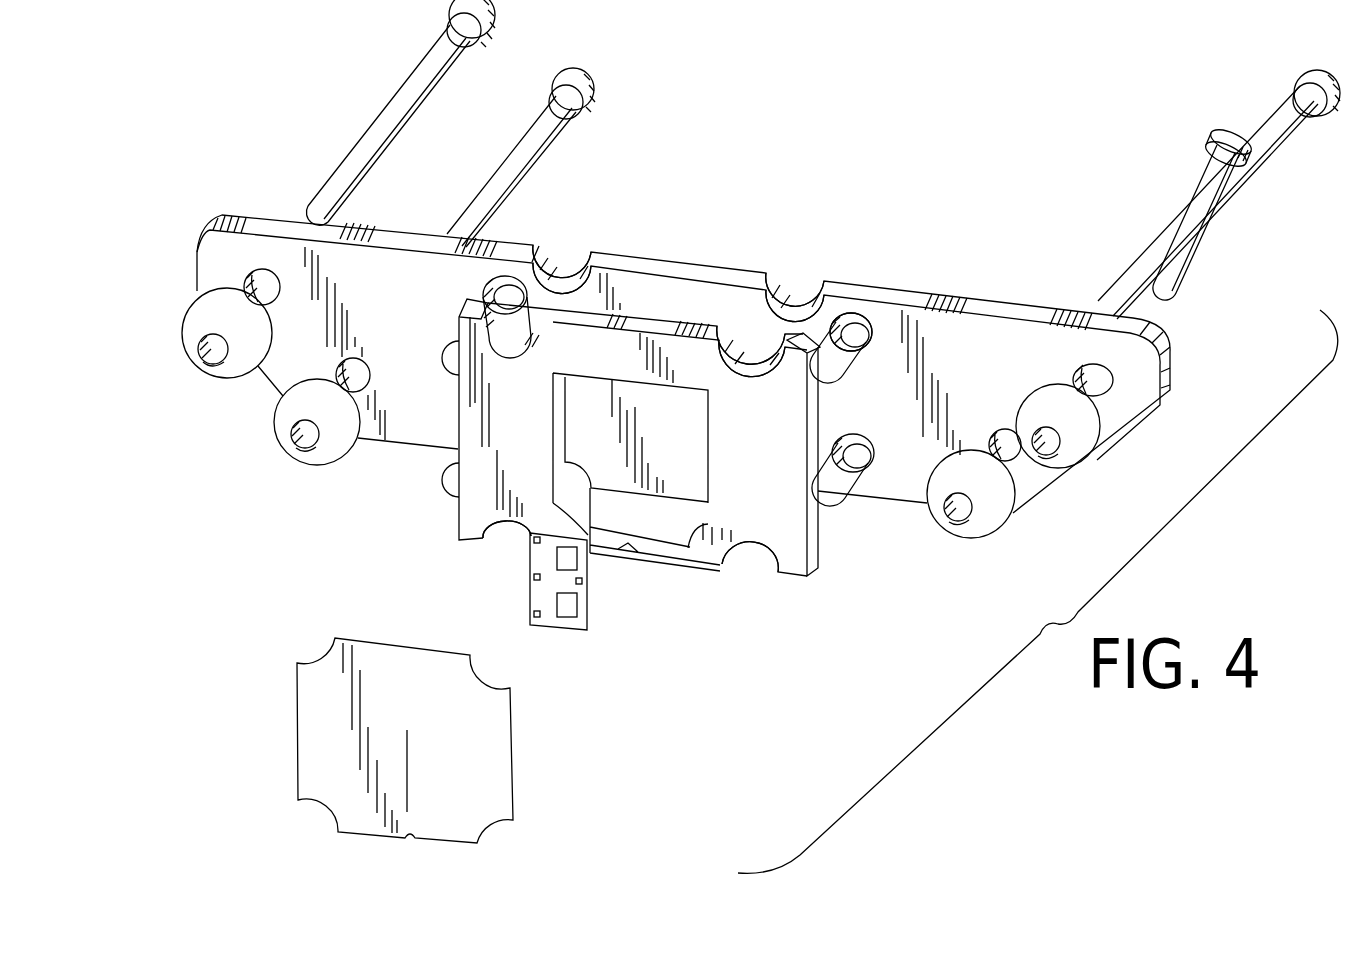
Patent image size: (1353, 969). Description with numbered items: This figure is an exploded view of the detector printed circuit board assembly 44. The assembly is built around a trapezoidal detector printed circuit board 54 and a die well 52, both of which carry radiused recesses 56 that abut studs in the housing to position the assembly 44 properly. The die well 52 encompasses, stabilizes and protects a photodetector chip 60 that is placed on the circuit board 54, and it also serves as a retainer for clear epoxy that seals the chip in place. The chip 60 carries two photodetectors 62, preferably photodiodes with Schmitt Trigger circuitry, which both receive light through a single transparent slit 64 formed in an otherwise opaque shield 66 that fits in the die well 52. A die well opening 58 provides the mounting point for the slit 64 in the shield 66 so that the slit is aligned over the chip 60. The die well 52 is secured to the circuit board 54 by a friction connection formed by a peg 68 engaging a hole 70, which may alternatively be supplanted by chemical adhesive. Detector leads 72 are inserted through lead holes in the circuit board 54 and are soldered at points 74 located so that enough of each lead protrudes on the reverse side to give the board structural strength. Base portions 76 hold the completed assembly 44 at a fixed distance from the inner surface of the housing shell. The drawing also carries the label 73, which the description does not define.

The detector printed circuit board assembly 44 is at (958, 109).
The die well 52 is at (761, 423).
The detector printed circuit board 54 is at (998, 364).
The radiused recesses 56 is at (558, 262).
The die well opening 58 is at (560, 370).
The photodetector chip 60 is at (578, 630).
The photodetectors 62 is at (575, 605).
The transparent slit 64 is at (407, 748).
The opaque shield 66 is at (503, 750).
The peg 68 is at (830, 373).
The hole 70 is at (855, 322).
The detector leads 72 is at (490, 183).
The mounting hole 73 is at (1100, 370).
The solder points 74 is at (993, 522).
The base portions 76 is at (1224, 138).